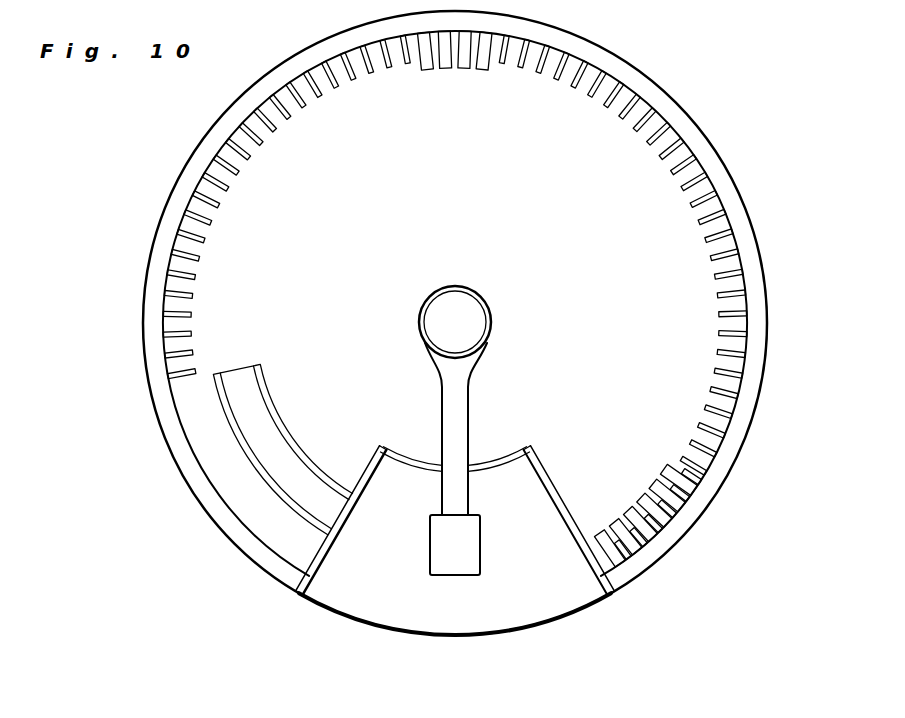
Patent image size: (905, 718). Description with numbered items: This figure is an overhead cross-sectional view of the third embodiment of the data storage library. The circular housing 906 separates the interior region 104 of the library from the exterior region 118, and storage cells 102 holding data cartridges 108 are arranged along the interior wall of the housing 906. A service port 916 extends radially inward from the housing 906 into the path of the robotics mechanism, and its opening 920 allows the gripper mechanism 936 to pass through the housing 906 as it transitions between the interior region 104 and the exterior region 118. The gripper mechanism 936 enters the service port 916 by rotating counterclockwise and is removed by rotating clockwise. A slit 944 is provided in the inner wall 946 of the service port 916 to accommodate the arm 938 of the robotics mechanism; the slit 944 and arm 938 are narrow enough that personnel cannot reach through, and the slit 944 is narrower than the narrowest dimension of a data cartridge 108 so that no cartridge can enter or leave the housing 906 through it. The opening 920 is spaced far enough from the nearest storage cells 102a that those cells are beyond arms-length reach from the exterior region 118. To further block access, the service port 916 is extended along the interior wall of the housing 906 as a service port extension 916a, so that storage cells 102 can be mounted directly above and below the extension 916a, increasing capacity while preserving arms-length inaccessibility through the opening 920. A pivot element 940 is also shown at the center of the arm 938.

The storage cells 102 is at (520, 64).
The nearest storage cells 102a is at (199, 361).
The interior region 104 is at (393, 205).
The data cartridge 108 is at (445, 68).
The exterior region 118 is at (763, 633).
The housing 906 is at (705, 492).
The service port 916 is at (557, 595).
The service port extension 916a is at (267, 388).
The opening 920 is at (357, 529).
The gripper mechanism 936 is at (452, 566).
The arm 938 is at (462, 392).
The ring member 940 is at (473, 320).
The slit 944 is at (412, 446).
The inner wall 946 is at (521, 440).